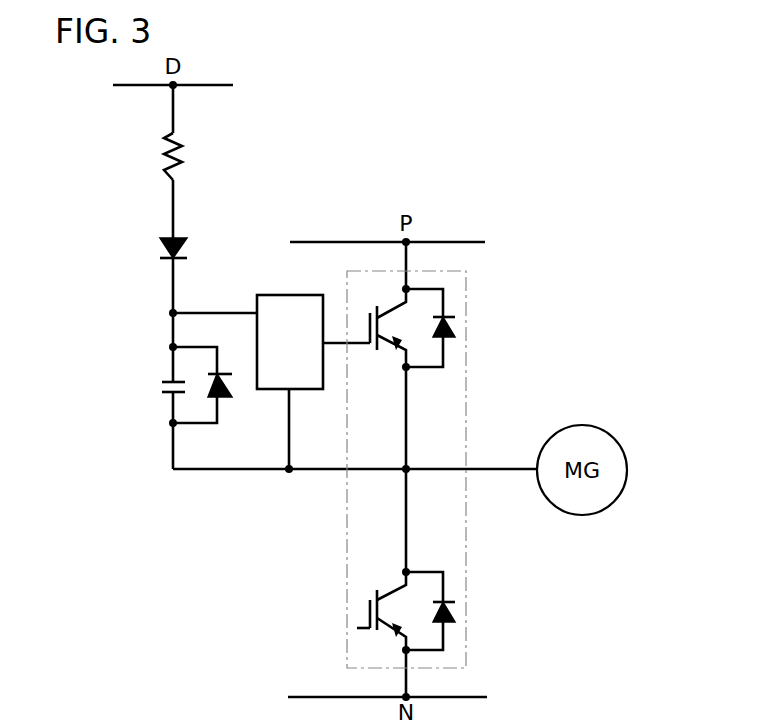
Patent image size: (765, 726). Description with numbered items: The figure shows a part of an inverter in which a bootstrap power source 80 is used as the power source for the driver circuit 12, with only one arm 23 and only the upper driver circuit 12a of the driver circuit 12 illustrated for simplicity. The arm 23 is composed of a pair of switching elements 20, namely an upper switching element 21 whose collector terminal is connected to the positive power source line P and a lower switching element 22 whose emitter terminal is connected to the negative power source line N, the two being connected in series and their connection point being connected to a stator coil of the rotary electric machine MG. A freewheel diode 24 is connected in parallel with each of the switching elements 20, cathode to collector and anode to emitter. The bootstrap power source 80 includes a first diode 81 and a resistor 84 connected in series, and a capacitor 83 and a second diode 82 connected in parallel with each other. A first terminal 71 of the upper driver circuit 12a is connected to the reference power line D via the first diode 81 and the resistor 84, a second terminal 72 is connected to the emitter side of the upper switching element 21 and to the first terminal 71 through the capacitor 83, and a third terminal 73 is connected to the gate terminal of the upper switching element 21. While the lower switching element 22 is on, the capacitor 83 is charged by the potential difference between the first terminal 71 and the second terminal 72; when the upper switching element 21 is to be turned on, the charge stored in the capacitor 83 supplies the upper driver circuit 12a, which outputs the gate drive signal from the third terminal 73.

The bootstrap power source 80 is at (233, 158).
The resistor 84 is at (160, 160).
The first diode 81 is at (160, 253).
The capacitor 83 is at (165, 395).
The second diode 82 is at (224, 398).
The upper driver circuit 12a is at (280, 295).
The driver circuit 12 is at (258, 297).
The first terminal 71 is at (257, 311).
The second terminal 72 is at (292, 392).
The third terminal 73 is at (330, 348).
The switching elements 20 is at (346, 421).
The upper switching element 21 is at (390, 312).
The lower switching element 22 is at (392, 598).
The arm 23 is at (466, 330).
The freewheel diode 24 is at (445, 340).